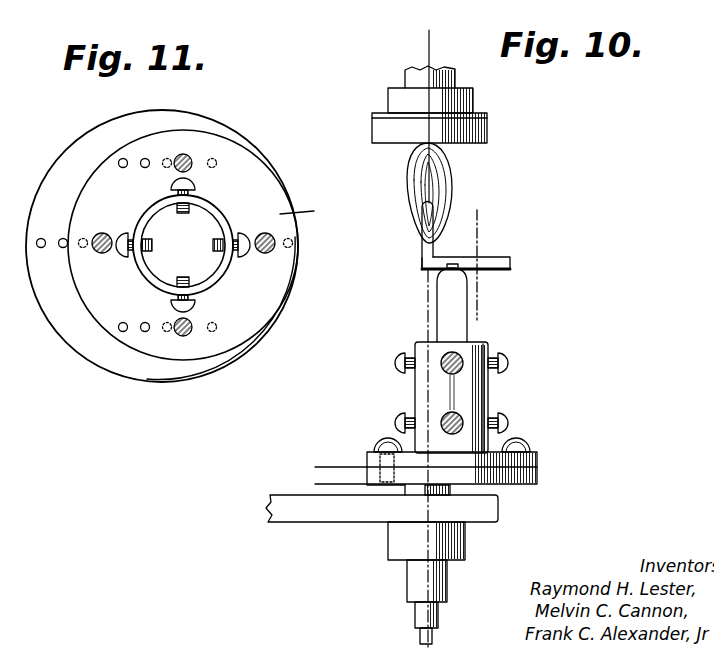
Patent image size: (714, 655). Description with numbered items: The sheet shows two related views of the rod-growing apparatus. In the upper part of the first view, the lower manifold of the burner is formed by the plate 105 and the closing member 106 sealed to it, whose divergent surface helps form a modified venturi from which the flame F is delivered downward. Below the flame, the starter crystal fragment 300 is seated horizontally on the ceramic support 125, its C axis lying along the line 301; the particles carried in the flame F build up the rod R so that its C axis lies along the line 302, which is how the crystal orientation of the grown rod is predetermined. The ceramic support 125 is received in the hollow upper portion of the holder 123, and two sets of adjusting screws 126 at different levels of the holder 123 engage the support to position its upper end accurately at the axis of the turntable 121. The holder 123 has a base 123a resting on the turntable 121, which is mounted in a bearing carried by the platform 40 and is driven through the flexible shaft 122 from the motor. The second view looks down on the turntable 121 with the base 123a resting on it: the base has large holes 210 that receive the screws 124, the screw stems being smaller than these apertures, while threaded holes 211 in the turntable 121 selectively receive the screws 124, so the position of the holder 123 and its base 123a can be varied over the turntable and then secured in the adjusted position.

In FIG. 10, the platform 40 is at (283, 496).
In FIG. 10, the plate 105 is at (470, 112).
In FIG. 10, the closing member 106 is at (487, 137).
In FIG. 11, the turntable 121 is at (198, 121).
In FIG. 10, the turntable 121 is at (538, 477).
In FIG. 10, the flexible shaft 122 is at (420, 612).
In FIG. 11, the holder 123 is at (231, 196).
In FIG. 10, the holder 123 is at (480, 398).
In FIG. 11, the base 123a is at (322, 216).
In FIG. 10, the base 123a is at (534, 457).
In FIG. 10, the screws 124 is at (513, 446).
In FIG. 10, the ceramic support 125 is at (456, 287).
In FIG. 10, the adjusting screws 126 is at (463, 362).
In FIG. 11, the large holes 210 is at (264, 256).
In FIG. 11, the threaded holes 211 is at (145, 158).
In FIG. 10, the starter crystal fragment 300 is at (510, 265).
In FIG. 10, the line 301 is at (477, 247).
In FIG. 10, the line 302 is at (427, 175).
In FIG. 10, the flame F is at (447, 181).
In FIG. 10, the rod R is at (431, 229).